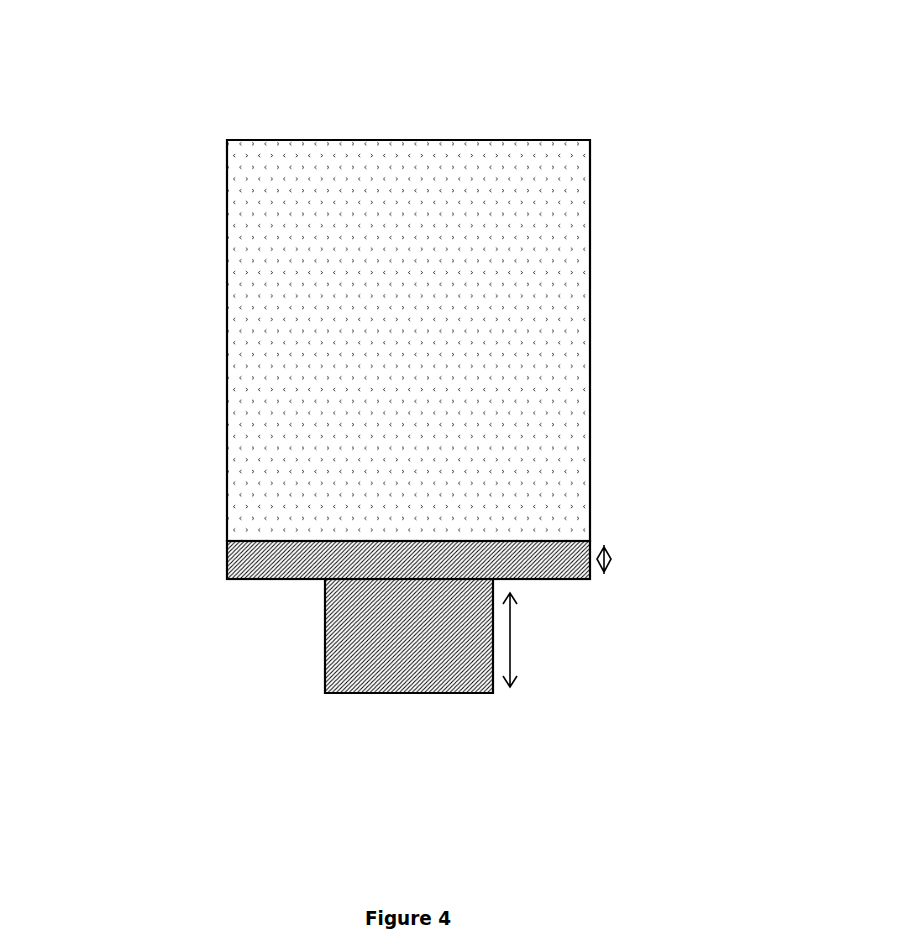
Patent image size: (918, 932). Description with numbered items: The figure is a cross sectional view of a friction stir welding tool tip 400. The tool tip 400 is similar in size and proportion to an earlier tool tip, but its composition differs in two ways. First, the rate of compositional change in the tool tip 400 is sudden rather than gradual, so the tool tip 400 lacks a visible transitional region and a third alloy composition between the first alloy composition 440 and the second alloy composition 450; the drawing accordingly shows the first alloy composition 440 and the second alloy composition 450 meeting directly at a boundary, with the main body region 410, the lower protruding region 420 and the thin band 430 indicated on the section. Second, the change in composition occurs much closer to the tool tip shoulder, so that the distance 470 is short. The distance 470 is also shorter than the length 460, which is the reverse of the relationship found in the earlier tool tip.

The tool tip 400 is at (706, 98).
The substrate body 410 is at (227, 329).
The protruding portion 420 is at (325, 668).
The intermediate layer 430 is at (225, 577).
The first alloy composition 440 is at (413, 670).
The second alloy composition 450 is at (422, 363).
The length 460 is at (510, 645).
The distance 470 is at (612, 559).